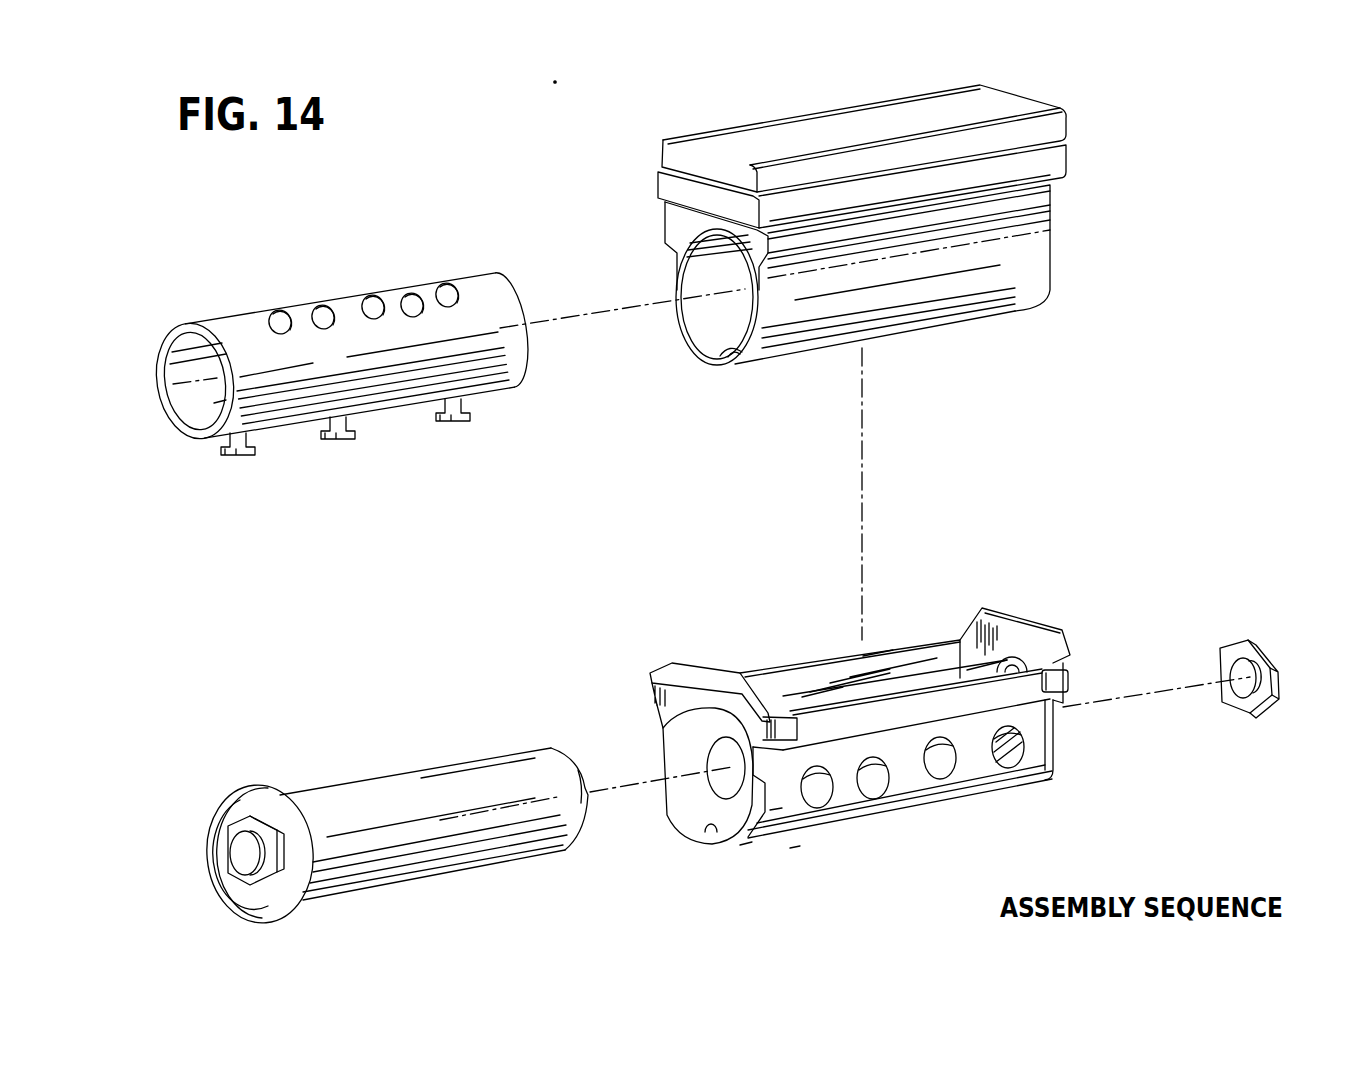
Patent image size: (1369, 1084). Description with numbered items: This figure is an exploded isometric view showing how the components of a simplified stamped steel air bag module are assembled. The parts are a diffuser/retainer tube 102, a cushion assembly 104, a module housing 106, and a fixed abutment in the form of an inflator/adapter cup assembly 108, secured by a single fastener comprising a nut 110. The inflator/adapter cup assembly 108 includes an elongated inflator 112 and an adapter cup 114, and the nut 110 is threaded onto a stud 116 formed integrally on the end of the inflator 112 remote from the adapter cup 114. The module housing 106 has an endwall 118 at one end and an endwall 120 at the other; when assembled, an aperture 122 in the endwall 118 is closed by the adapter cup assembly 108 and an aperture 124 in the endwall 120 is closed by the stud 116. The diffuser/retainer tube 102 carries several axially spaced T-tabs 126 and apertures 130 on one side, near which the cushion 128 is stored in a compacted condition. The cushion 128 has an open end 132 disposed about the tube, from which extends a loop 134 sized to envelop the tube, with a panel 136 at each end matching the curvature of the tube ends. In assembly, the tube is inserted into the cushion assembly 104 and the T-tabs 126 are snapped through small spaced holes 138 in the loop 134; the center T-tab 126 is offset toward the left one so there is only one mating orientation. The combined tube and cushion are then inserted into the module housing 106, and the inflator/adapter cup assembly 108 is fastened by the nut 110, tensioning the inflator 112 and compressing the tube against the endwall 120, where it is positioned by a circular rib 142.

The diffuser/retainer tube 102 is at (215, 310).
The cushion assembly 104 is at (846, 242).
The module housing 106 is at (846, 722).
The inflator/adapter cup assembly 108 is at (397, 853).
The nut 110 is at (1255, 650).
The inflator 112 is at (388, 858).
The adapter cup 114 is at (255, 912).
The stud 116 is at (588, 800).
The endwall 118 is at (656, 706).
The endwall 120 is at (1063, 722).
The aperture 122 is at (712, 833).
The aperture 124 is at (1060, 630).
The T-tabs 126 is at (237, 458).
The cushion 128 is at (1020, 248).
The apertures 130 is at (370, 297).
The open end 132 is at (700, 258).
The loop 134 is at (787, 333).
The panel 136 is at (668, 224).
The holes 138 is at (702, 352).
The circular rib 142 is at (997, 676).